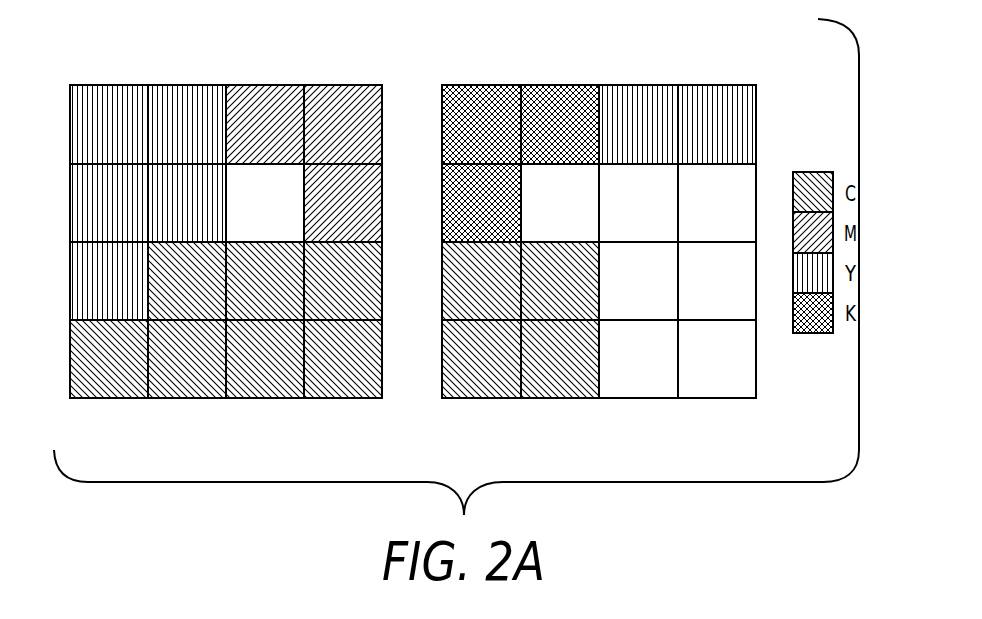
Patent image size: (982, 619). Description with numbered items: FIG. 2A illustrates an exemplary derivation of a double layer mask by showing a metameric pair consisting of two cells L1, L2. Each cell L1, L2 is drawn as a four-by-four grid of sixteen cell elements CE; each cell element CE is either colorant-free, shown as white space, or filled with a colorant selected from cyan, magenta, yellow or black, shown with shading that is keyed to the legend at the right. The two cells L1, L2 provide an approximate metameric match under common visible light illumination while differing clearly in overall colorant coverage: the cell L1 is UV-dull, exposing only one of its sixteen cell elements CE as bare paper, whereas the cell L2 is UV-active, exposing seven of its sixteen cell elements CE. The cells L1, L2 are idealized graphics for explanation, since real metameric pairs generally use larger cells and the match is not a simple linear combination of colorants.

The UV-dull metameric cell L1 is at (187, 78).
The UV-active metameric cell L2 is at (547, 78).
The cell element CE is at (118, 393).